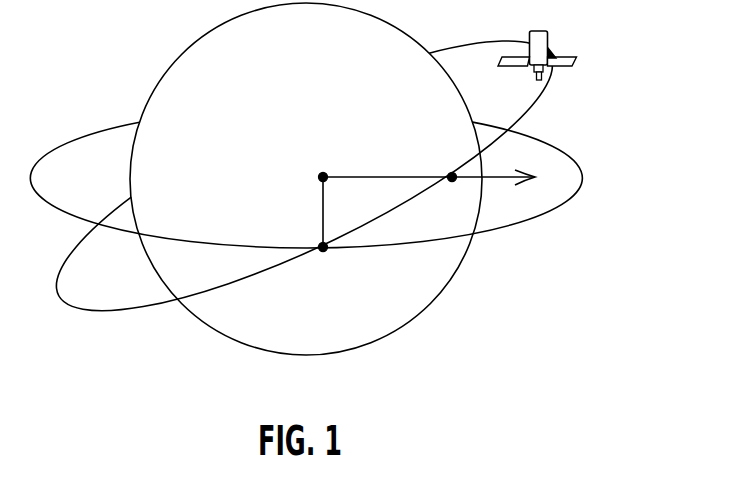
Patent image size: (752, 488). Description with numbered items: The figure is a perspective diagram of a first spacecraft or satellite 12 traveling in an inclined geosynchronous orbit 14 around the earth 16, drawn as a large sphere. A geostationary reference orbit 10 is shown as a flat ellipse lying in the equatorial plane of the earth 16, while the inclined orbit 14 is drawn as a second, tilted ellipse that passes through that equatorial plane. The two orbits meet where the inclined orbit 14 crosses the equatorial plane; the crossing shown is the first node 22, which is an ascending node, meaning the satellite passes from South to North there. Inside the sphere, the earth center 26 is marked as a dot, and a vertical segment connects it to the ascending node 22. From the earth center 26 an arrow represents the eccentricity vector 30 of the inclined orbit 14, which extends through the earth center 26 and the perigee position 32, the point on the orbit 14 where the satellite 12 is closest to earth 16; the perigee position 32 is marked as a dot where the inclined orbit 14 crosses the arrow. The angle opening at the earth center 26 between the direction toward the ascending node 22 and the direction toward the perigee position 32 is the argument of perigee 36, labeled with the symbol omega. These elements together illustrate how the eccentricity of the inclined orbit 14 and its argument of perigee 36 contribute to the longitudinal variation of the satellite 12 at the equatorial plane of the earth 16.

The geostationary reference orbit 10 is at (547, 140).
The first spacecraft or satellite 12 is at (544, 31).
The inclined geosynchronous orbit 14 is at (495, 42).
The earth 16 is at (155, 87).
The first node (ascending node) 22 is at (326, 252).
The earth center 26 is at (321, 172).
The eccentricity vector 30 is at (492, 173).
The perigee position 32 is at (454, 183).
The argument of perigee 36 is at (348, 190).